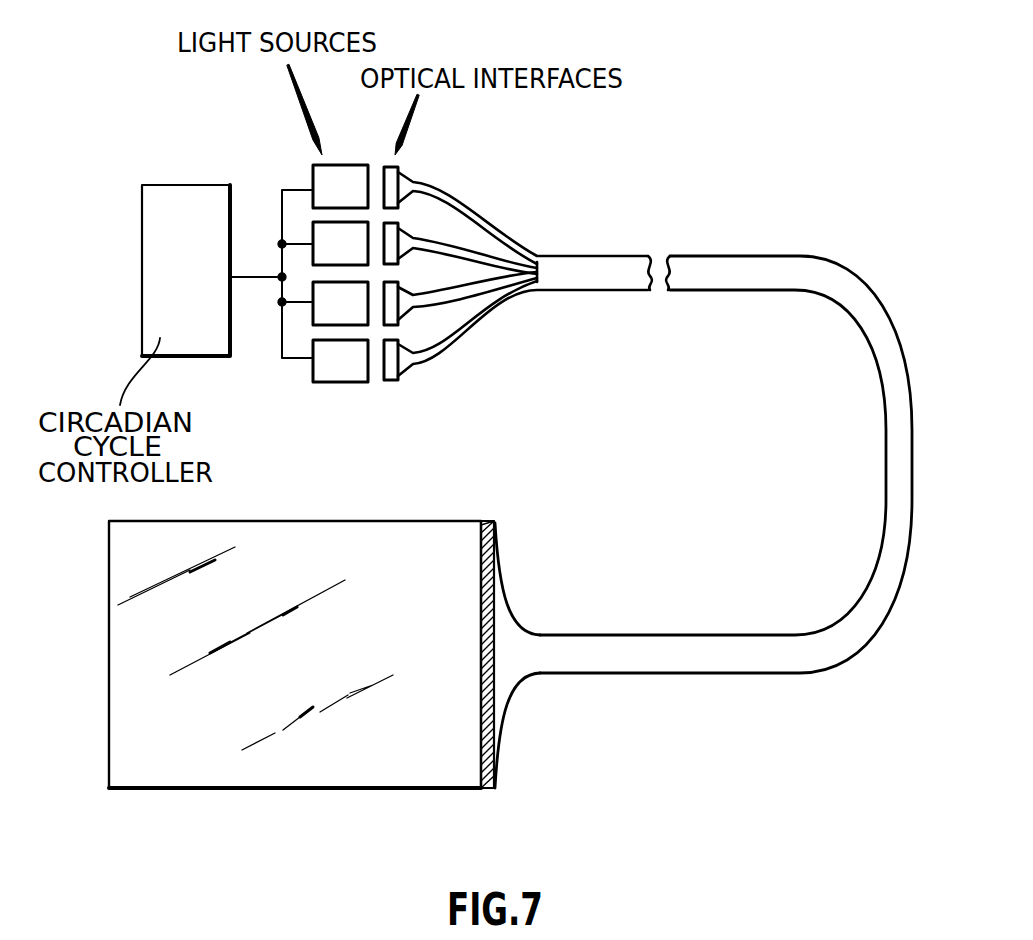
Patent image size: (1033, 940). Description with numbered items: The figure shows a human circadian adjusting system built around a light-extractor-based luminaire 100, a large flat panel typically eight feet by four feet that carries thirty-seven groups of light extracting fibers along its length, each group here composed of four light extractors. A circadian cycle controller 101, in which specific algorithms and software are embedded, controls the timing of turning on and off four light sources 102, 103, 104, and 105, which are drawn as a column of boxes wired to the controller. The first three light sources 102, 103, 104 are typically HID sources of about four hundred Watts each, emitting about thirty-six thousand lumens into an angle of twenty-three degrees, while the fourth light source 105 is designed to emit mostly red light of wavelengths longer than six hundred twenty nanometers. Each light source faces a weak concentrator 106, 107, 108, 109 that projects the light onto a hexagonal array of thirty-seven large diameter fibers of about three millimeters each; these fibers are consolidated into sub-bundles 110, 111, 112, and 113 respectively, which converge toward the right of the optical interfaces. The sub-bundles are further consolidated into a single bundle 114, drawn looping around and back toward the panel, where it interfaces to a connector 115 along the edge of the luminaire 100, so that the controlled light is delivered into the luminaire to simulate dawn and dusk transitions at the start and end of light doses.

The luminaire 100 is at (295, 606).
The circadian cycle controller 101 is at (148, 279).
The light source 102 is at (322, 185).
The light source 103 is at (325, 242).
The light source 104 is at (328, 310).
The light source 105 is at (330, 368).
The weak concentrator 106 is at (398, 175).
The weak concentrator 107 is at (398, 233).
The weak concentrator 108 is at (392, 298).
The weak concentrator 109 is at (388, 383).
The sub-bundle 110 is at (473, 217).
The sub-bundle 111 is at (490, 262).
The sub-bundle 112 is at (481, 326).
The sub-bundle 113 is at (443, 347).
The single bundle 114 is at (887, 389).
The connector 115 is at (493, 522).